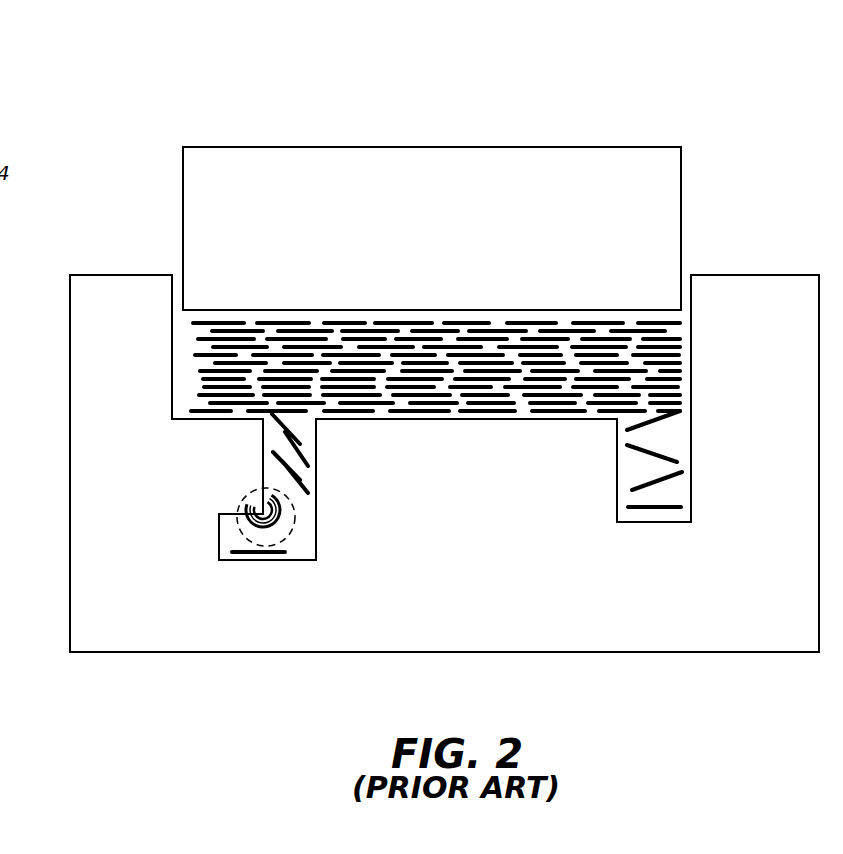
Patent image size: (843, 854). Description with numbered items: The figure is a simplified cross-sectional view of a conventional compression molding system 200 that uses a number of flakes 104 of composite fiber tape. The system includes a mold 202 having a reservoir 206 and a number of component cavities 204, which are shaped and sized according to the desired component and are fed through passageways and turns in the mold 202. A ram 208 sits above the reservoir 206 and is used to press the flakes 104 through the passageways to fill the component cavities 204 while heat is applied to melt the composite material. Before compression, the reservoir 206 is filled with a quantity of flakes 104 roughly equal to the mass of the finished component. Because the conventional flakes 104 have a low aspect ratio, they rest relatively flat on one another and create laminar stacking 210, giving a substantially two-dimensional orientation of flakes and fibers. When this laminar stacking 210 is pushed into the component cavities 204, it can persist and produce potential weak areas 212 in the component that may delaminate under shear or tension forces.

The conventional compression molding system 200 is at (596, 84).
The mold 202 is at (157, 625).
The component cavities 204 is at (227, 546).
The reservoir 206 is at (173, 387).
The ram 208 is at (655, 198).
The laminar stacking 210 is at (176, 355).
The weak areas 212 is at (288, 517).
The flakes 104 is at (200, 396).